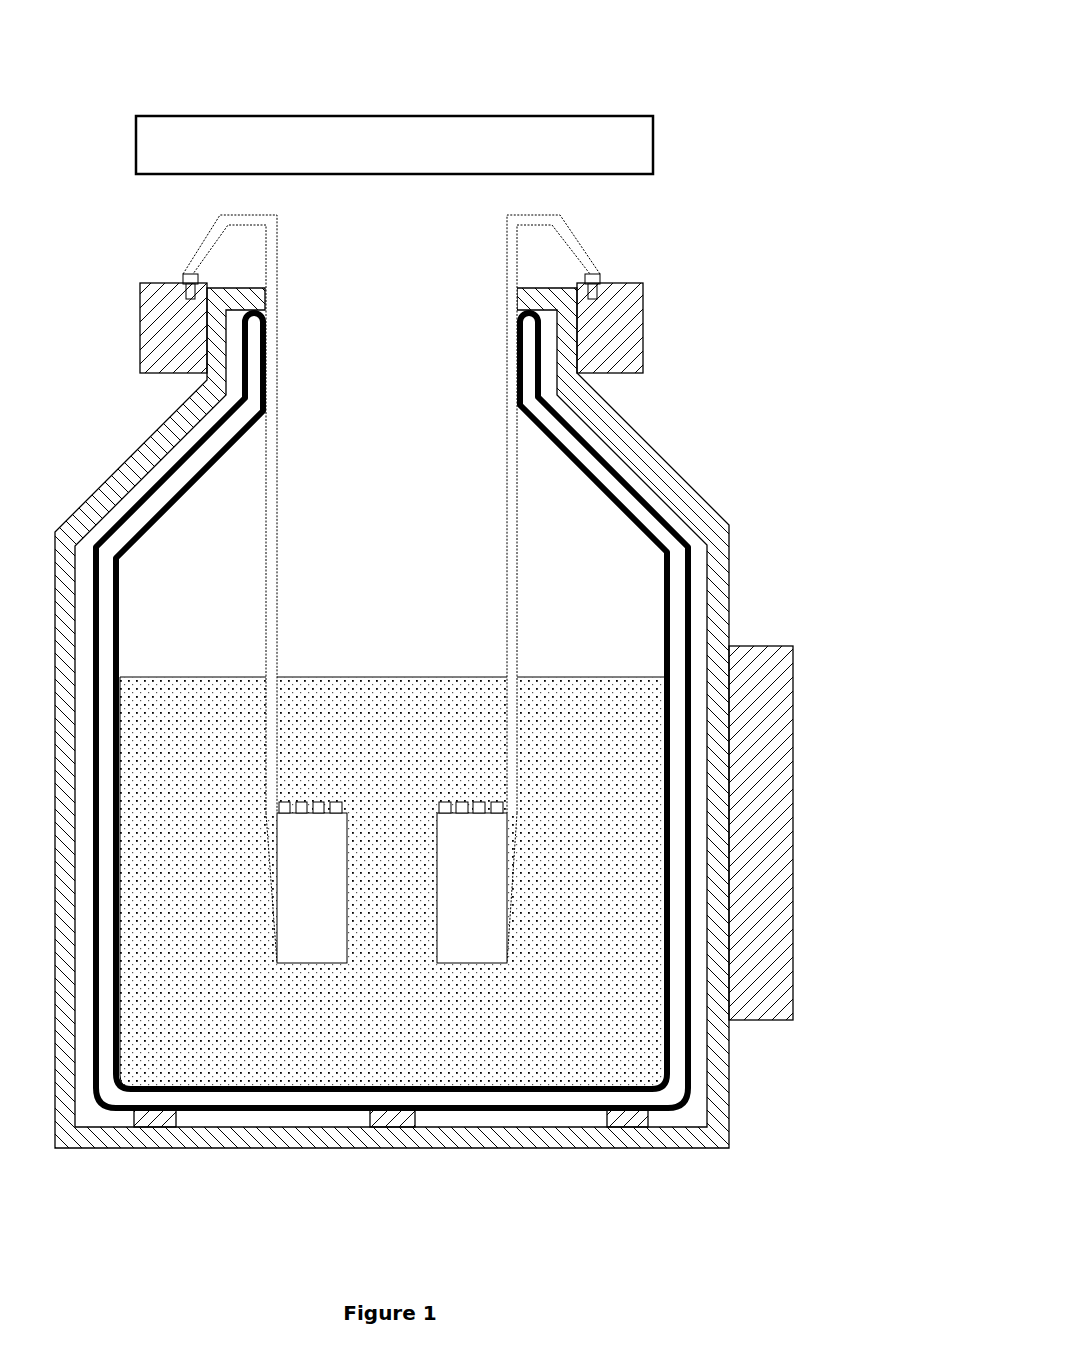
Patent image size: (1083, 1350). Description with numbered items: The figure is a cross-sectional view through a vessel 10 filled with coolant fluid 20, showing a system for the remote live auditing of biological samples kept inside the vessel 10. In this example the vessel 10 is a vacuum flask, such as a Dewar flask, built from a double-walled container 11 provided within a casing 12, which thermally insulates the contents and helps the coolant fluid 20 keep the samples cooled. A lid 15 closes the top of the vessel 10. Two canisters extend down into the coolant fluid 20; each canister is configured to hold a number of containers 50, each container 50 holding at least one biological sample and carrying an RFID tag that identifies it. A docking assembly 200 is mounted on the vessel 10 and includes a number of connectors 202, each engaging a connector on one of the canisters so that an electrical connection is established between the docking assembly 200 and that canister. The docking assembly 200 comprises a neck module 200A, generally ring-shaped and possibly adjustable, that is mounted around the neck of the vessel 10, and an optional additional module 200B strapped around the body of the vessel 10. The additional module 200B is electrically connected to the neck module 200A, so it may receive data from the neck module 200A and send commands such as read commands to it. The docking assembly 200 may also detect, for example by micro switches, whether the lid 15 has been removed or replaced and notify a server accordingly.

The vessel 10 is at (462, 718).
The double-walled container 11 is at (693, 1080).
The casing 12 is at (728, 610).
The lid 15 is at (630, 116).
The coolant fluid 20 is at (586, 1023).
The container 50 is at (284, 802).
The docking assembly 200 is at (415, 311).
The neck module 200A is at (643, 355).
The additional module 200B is at (793, 770).
The connector 202 is at (183, 296).